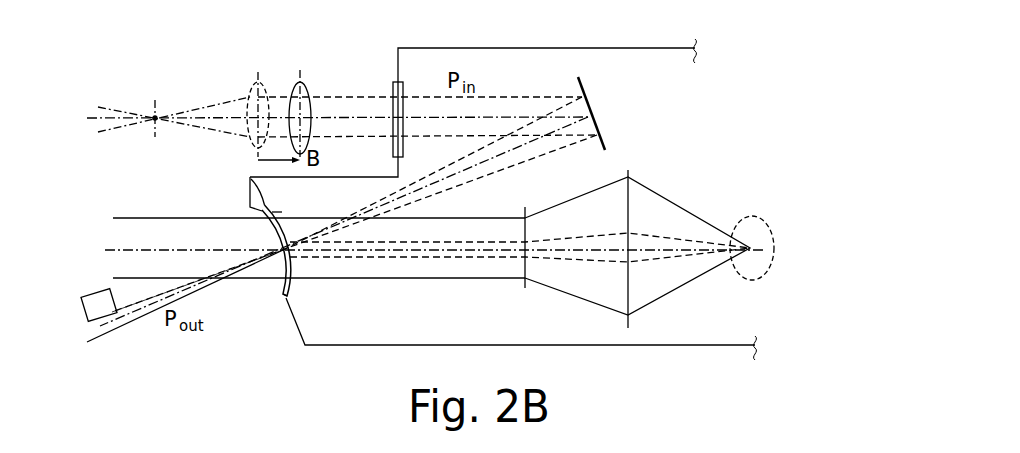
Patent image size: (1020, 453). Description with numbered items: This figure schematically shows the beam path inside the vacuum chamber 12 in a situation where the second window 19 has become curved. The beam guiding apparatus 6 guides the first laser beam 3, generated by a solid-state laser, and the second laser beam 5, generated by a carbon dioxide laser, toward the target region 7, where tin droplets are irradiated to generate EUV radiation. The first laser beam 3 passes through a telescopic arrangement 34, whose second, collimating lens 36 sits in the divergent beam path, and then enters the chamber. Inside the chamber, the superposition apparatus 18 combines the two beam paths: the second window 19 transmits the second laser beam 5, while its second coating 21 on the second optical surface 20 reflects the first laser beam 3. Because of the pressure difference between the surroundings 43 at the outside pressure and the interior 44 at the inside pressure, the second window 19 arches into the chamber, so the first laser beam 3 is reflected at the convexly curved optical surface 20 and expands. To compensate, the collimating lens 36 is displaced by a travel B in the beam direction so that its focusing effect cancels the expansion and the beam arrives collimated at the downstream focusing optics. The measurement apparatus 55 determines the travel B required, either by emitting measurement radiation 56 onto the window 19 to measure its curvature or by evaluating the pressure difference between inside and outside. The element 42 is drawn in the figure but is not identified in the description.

The first laser beam 3 is at (352, 110).
The second laser beam 5 is at (152, 233).
The beam guiding apparatus 6 is at (102, 84).
The target region 7 is at (763, 218).
The vacuum chamber 12 is at (740, 343).
The superposition apparatus 18 is at (310, 271).
The second window 19 is at (280, 285).
The second optical surface 20 is at (250, 178).
The second coating 21 is at (250, 203).
The telescopic arrangement 34 is at (245, 76).
The second collimating lens 36 is at (298, 82).
The housing wall 42 is at (650, 48).
The surroundings 43 is at (162, 88).
The interior 44 is at (718, 112).
The measurement apparatus 55 is at (83, 311).
The measurement radiation 56 is at (131, 290).